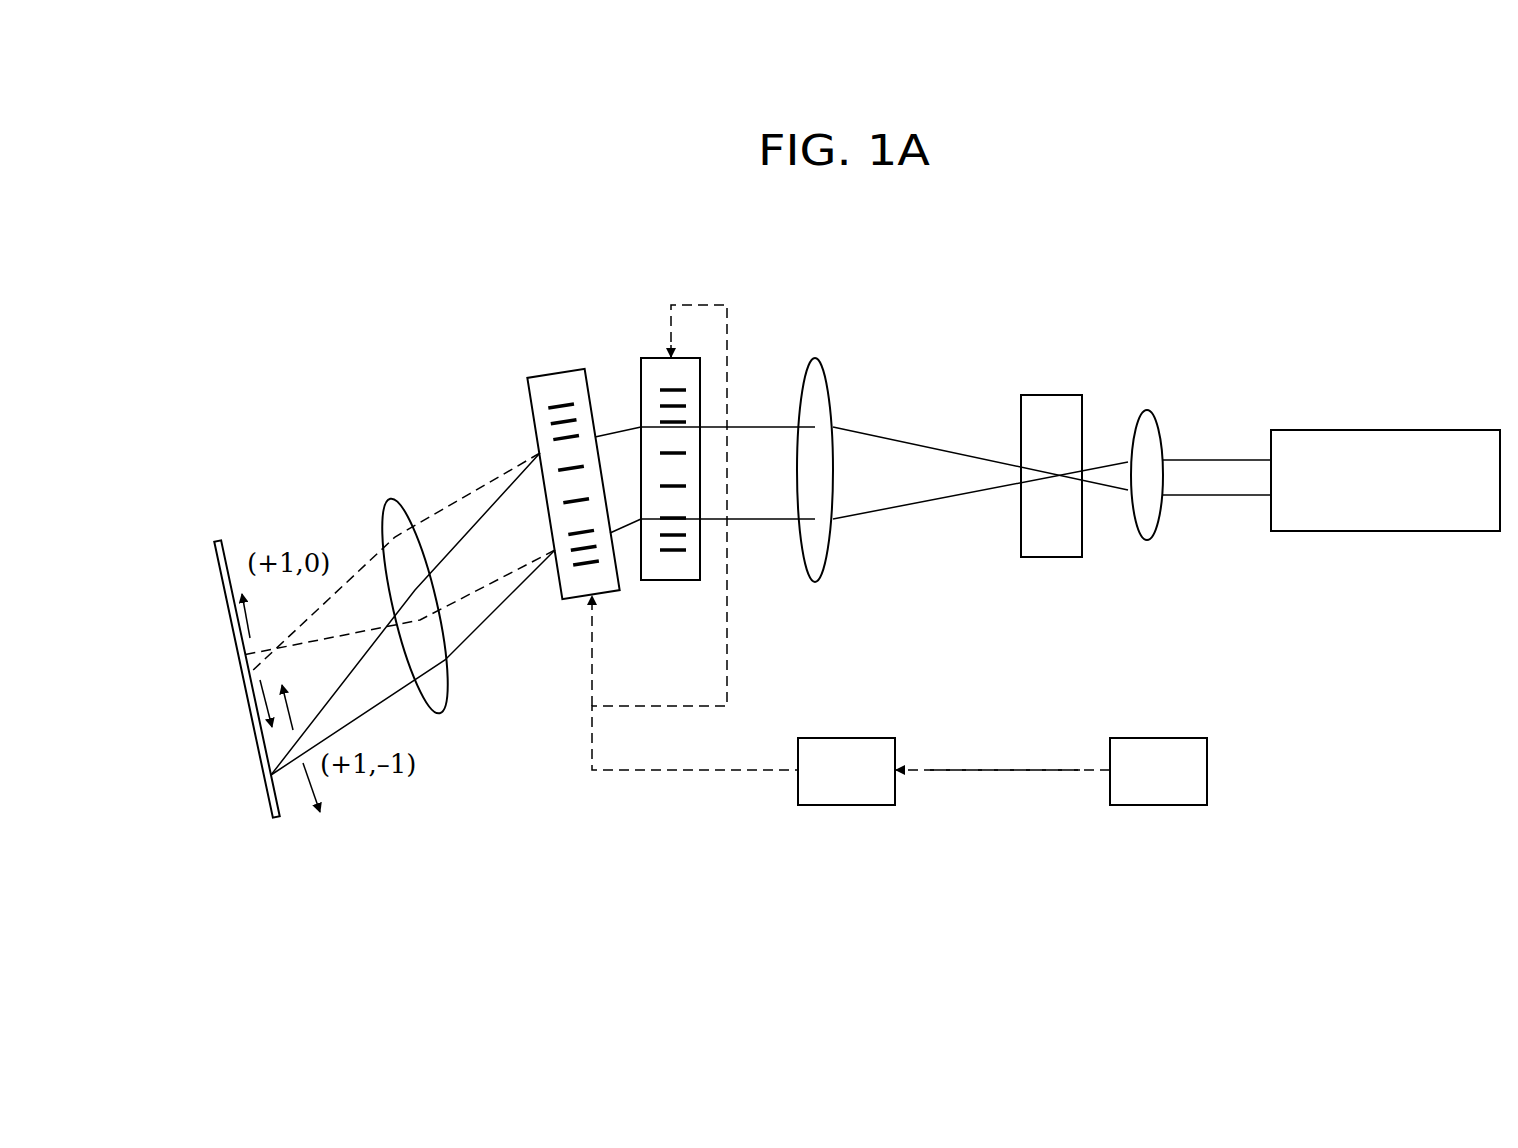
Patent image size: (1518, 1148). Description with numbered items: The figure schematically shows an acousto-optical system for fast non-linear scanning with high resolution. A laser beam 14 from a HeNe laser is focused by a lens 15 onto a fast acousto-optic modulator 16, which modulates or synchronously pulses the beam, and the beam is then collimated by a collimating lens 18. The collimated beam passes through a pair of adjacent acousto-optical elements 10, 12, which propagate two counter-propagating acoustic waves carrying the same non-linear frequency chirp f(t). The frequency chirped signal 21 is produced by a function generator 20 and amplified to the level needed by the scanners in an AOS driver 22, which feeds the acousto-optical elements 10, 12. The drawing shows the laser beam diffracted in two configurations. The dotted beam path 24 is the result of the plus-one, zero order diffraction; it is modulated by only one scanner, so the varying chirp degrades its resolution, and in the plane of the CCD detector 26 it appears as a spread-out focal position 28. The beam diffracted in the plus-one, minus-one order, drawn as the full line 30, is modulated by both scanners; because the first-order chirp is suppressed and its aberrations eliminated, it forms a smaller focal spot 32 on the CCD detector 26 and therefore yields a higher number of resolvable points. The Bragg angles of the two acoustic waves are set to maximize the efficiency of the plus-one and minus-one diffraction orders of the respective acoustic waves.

The acousto-optical element 10 is at (556, 372).
The acousto-optical element 12 is at (651, 358).
The laser beam 14 is at (1228, 450).
The lens 15 is at (1148, 412).
The acousto-optic modulator 16 is at (1045, 398).
The collimating lens 18 is at (808, 360).
The function generator 20 is at (1178, 738).
The frequency chirped signal 21 is at (1000, 770).
The AOS driver 22 is at (840, 738).
The dotted beam path 24 is at (440, 510).
The CCD detector 26 is at (278, 818).
The spread-out focal position 28 is at (240, 658).
The full line beam 30 is at (477, 630).
The focal spot 32 is at (267, 773).